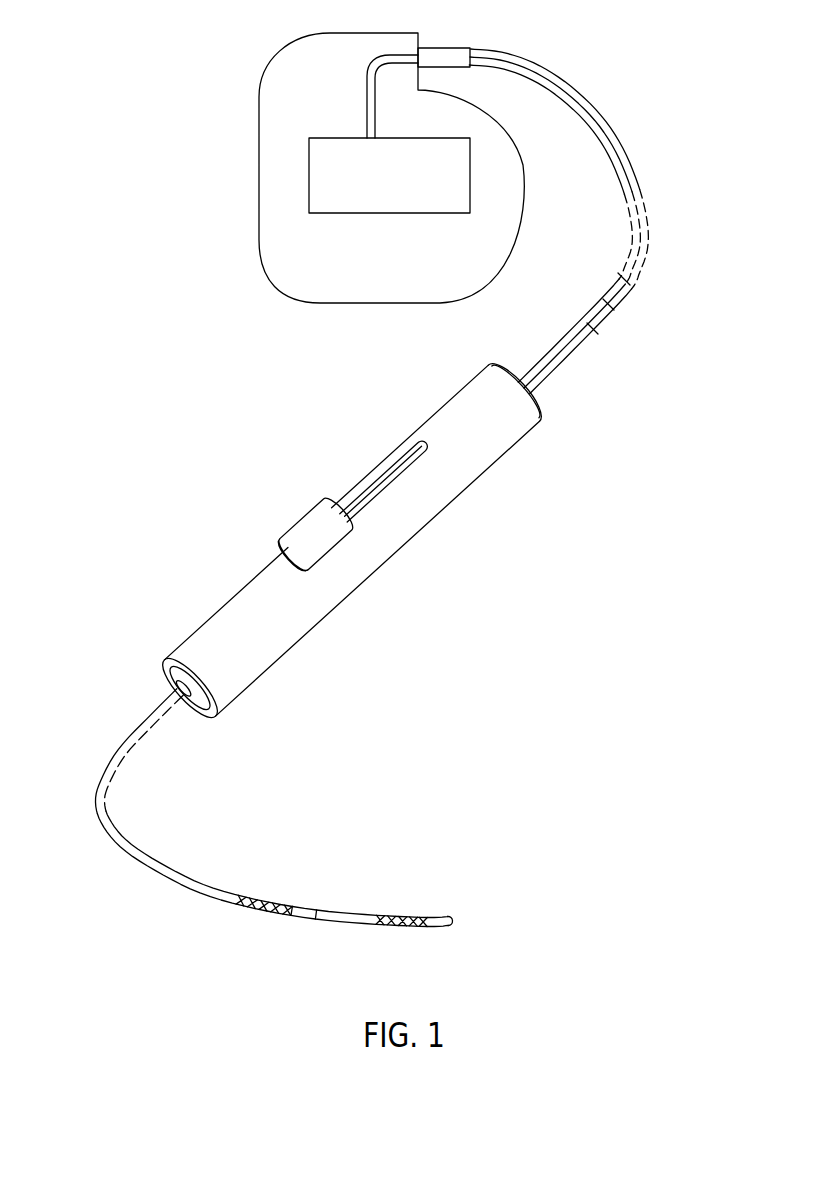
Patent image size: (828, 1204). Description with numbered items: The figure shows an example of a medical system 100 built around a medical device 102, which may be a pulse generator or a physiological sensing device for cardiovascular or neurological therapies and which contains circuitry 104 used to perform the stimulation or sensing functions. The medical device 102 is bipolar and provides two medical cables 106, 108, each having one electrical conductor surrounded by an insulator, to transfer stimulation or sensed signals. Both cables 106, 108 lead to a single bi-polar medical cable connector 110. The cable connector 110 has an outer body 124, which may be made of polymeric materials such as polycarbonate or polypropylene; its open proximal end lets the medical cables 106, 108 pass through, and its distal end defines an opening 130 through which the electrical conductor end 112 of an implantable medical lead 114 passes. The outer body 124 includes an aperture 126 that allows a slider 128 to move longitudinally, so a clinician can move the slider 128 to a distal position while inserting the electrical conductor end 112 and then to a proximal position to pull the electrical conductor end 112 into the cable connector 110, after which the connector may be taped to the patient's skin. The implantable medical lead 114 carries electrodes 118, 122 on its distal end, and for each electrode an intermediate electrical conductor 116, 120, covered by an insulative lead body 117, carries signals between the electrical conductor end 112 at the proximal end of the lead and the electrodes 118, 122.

The implantable medical system 100 is at (183, 267).
The medical device 102 is at (280, 193).
The circuitry 104 is at (452, 213).
The medical cable 106 is at (612, 312).
The medical cable 108 is at (602, 327).
The medical cable connector 110 is at (410, 550).
The electrical conductor end 112 is at (178, 705).
The implantable medical lead 114 is at (108, 779).
The intermediate electrical conductor 116 is at (258, 893).
The insulative lead body 117 is at (167, 858).
The electrode 118 is at (307, 903).
The intermediate electrical conductor 120 is at (385, 913).
The electrode 122 is at (440, 920).
The outer body 124 is at (505, 449).
The aperture 126 is at (421, 439).
The slider 128 is at (312, 526).
The opening 130 is at (177, 689).